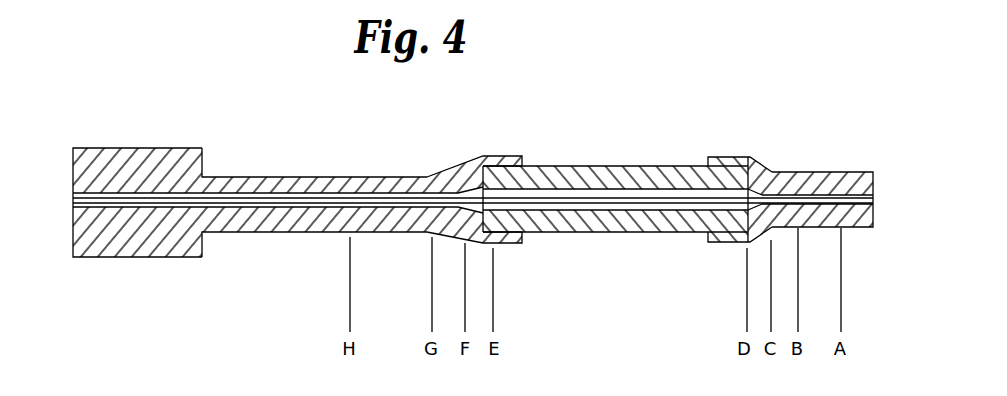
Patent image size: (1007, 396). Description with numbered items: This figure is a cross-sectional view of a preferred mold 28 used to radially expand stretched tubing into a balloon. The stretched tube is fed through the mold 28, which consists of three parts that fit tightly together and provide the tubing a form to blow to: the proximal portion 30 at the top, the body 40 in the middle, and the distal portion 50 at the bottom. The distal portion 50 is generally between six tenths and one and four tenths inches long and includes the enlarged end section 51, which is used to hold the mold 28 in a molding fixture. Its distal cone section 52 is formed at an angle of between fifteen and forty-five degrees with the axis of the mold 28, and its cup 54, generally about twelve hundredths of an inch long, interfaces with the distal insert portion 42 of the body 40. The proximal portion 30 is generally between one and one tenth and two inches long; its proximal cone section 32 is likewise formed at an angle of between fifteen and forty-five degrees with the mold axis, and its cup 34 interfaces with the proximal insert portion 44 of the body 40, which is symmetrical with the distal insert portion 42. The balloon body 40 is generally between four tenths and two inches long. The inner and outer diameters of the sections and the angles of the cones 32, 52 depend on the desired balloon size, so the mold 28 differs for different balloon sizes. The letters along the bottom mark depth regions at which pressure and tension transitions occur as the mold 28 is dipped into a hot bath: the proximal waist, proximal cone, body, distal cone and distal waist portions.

The mold 28 is at (368, 150).
The proximal portion 30 is at (822, 178).
The proximal cone section 32 is at (768, 172).
The cup of the proximal portion 34 is at (733, 162).
The body 40 is at (622, 172).
The distal insert portion 42 is at (518, 243).
The proximal insert portion 44 is at (717, 242).
The distal portion 50 is at (296, 180).
The enlarged end section 51 is at (162, 163).
The distal cone section 52 is at (464, 180).
The cup of the distal portion 54 is at (510, 157).